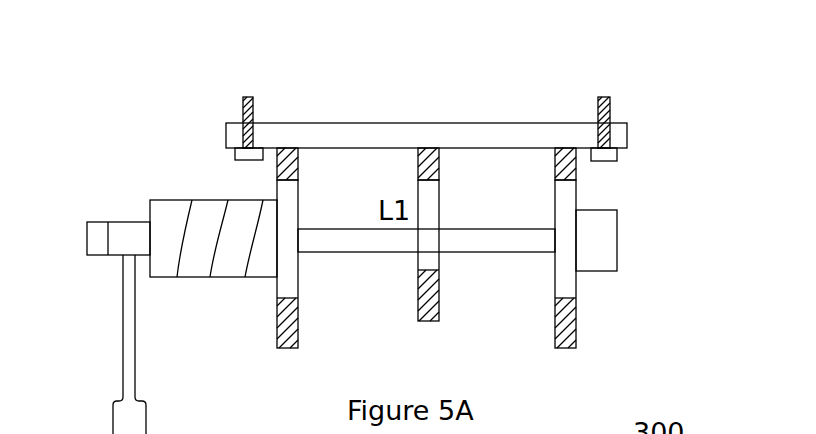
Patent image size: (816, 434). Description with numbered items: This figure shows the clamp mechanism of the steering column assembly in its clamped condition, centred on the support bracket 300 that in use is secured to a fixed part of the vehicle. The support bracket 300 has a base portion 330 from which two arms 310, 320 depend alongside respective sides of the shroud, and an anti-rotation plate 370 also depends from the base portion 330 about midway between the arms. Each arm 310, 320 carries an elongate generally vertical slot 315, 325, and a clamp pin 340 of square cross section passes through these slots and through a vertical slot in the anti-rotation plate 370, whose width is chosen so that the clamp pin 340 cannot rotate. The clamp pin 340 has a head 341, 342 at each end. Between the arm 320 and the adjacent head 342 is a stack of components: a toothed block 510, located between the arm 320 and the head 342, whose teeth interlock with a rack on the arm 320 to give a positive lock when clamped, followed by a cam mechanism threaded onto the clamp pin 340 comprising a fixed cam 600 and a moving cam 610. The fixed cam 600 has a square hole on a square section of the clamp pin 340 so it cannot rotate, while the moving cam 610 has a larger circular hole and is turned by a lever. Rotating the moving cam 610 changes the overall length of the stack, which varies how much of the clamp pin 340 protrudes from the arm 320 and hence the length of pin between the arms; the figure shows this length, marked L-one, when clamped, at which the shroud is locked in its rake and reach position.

The support bracket 300 is at (573, 107).
The arm 310 is at (572, 323).
The elongate generally vertical slot 315 is at (577, 192).
The arm 320 is at (284, 326).
The elongate generally vertical slot 325 is at (298, 202).
The base portion 330 is at (417, 123).
The clamp pin 340 is at (392, 253).
The head 341 is at (603, 253).
The head 342 is at (85, 243).
The anti-rotation plate 370 is at (428, 162).
The toothed block 510 is at (227, 277).
The fixed cam 600 is at (210, 200).
The moving cam 610 is at (173, 200).